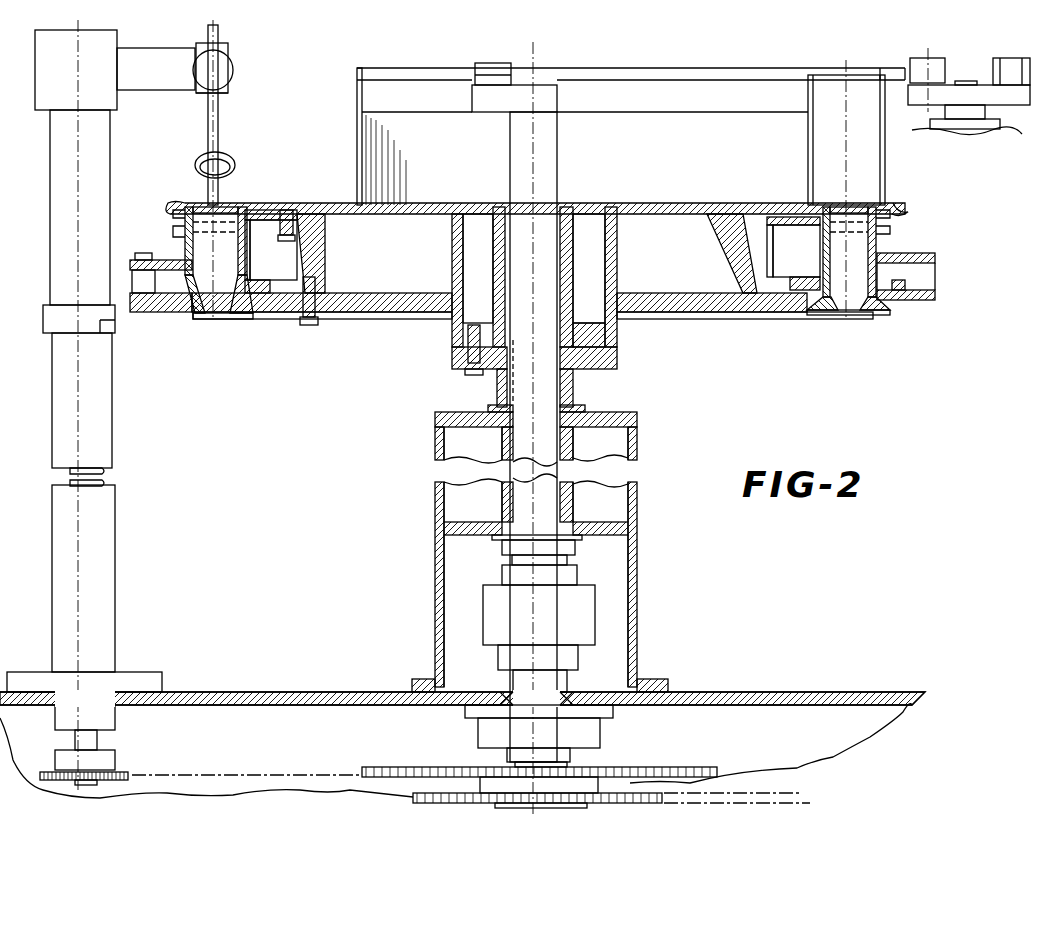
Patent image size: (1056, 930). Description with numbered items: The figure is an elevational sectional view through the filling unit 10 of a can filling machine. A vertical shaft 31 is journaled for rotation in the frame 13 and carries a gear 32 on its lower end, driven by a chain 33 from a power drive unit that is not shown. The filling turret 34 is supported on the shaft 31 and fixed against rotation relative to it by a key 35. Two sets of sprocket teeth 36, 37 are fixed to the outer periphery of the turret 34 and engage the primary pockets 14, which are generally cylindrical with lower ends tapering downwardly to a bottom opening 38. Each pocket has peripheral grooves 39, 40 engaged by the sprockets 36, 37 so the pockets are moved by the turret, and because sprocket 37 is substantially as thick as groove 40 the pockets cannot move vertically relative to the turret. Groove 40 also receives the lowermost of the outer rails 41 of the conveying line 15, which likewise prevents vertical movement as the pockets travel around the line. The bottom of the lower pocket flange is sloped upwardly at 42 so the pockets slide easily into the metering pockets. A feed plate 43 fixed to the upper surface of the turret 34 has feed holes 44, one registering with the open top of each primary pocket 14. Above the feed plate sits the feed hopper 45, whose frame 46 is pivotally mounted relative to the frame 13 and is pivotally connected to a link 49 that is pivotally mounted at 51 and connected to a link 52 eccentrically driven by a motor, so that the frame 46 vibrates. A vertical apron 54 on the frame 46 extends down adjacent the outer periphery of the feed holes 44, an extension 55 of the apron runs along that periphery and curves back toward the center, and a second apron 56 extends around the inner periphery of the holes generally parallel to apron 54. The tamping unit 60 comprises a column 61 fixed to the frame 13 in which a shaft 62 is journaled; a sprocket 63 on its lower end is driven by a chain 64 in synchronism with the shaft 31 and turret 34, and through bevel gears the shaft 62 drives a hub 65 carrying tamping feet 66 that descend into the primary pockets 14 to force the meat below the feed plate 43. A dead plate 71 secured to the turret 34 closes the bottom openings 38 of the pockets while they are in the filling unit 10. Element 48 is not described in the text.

The filling unit 10 is at (773, 383).
The frame 13 is at (838, 671).
The primary pockets 14 is at (880, 242).
The conveying line 15 is at (940, 249).
The vertical shaft 31 is at (556, 396).
The gear 32 is at (428, 795).
The chain 33 is at (727, 793).
The filling turret 34 is at (447, 341).
The key 35 is at (505, 385).
The sprocket teeth 36 is at (271, 229).
The sprocket teeth 37 is at (287, 274).
The bottom opening 38 is at (205, 316).
The peripheral groove 39 is at (175, 233).
The peripheral groove 40 is at (176, 311).
The outer rails 41 is at (935, 266).
The sloped bottom 42 is at (879, 307).
The feed plate 43 is at (312, 206).
The feed holes 44 is at (870, 200).
The feed hopper 45 is at (657, 67).
The frame 46 is at (446, 72).
The nut 48 is at (497, 92).
The link 49 is at (975, 102).
The pivot 51 is at (967, 82).
The link 52 is at (1030, 58).
The vertical apron 54 is at (870, 120).
The extension 55 is at (433, 119).
The second apron 56 is at (672, 97).
The tamping unit 60 is at (249, 78).
The column 61 is at (108, 430).
The shaft 62 is at (100, 474).
The sprocket 63 is at (128, 772).
The chain 64 is at (298, 773).
The hub 65 is at (229, 92).
The tamping feet 66 is at (194, 162).
The dead plate 71 is at (286, 320).